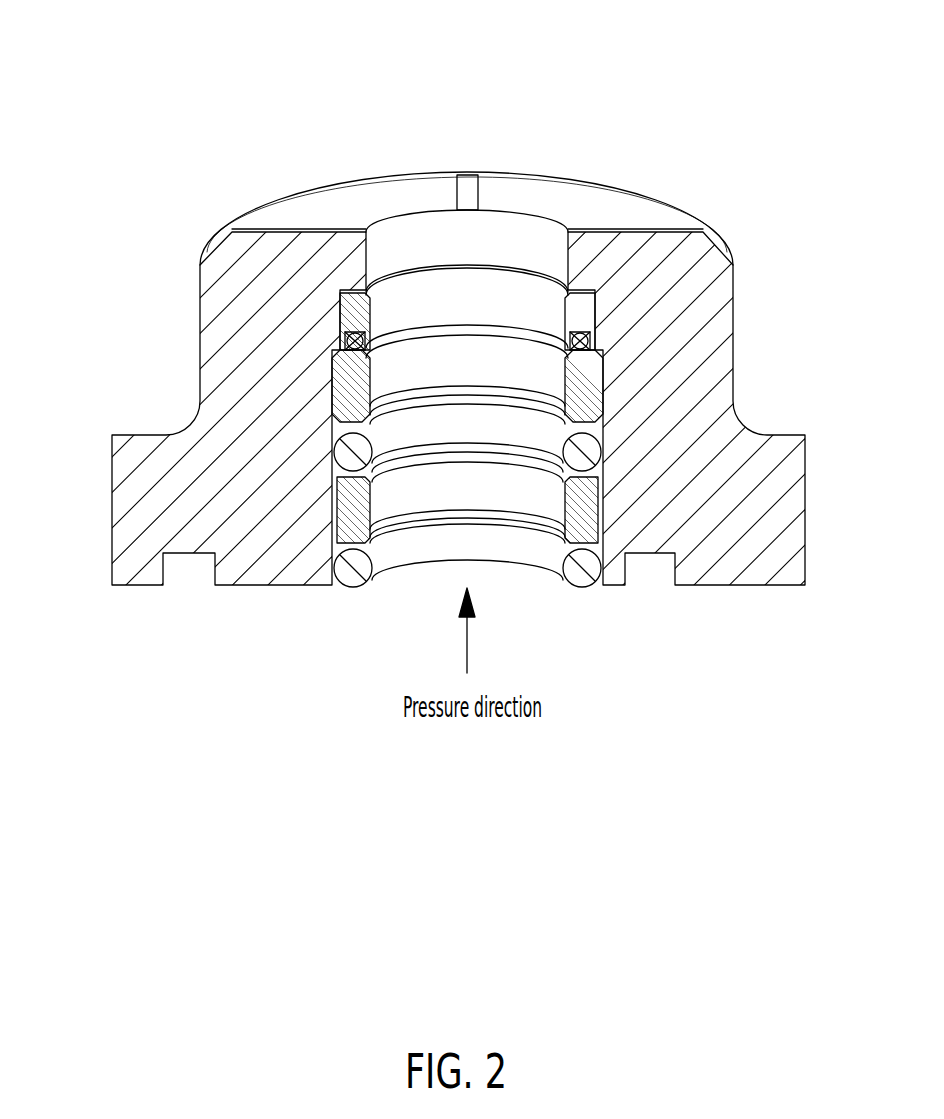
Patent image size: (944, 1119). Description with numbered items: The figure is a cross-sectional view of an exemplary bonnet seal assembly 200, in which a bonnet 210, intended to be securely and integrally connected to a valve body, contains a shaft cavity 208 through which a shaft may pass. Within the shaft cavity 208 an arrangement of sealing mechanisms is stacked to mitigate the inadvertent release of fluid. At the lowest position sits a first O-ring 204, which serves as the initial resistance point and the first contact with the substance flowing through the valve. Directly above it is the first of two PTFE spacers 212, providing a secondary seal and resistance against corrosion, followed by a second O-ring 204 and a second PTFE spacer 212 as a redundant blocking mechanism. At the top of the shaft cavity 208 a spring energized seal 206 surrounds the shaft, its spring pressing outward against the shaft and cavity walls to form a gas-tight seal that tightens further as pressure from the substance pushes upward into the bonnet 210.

The bonnet seal assembly 200 is at (93, 77).
The O-ring 204 is at (338, 448).
The spring energized seal 206 is at (547, 323).
The shaft cavity 208 is at (437, 190).
The bonnet 210 is at (343, 193).
The PTFE spacer 212 is at (587, 387).